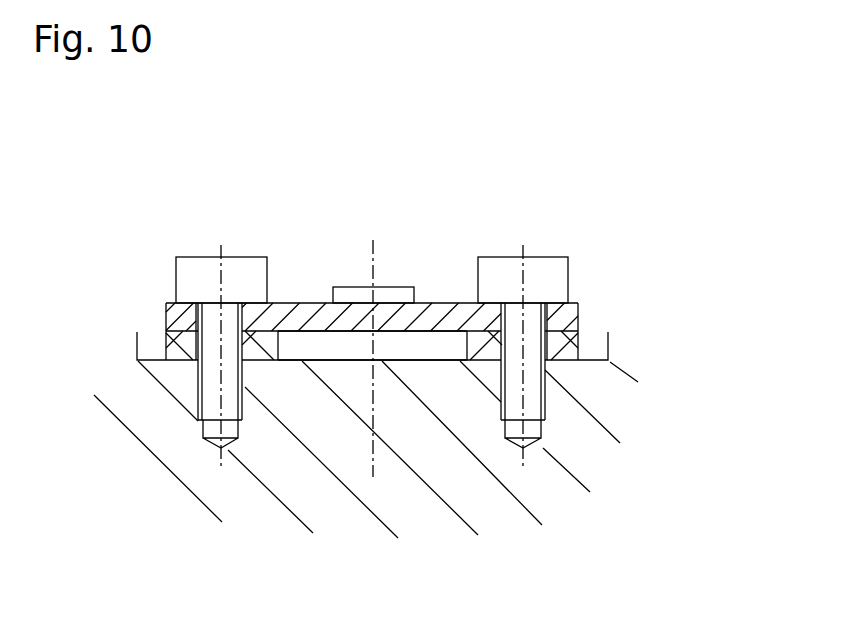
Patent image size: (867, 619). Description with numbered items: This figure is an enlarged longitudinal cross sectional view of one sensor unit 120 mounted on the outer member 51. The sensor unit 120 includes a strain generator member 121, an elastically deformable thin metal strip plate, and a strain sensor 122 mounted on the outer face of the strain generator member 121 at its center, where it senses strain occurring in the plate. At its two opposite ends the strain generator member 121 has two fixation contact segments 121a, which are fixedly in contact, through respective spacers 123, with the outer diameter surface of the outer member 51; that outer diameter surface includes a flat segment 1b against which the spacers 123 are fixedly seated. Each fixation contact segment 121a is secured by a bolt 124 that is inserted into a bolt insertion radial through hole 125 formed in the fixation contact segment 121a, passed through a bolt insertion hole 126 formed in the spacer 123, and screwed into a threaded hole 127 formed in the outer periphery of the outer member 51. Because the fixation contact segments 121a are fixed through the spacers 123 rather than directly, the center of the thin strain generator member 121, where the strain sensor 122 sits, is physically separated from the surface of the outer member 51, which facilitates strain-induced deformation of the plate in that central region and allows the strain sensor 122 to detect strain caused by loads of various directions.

The sensor unit 120 is at (237, 200).
The strain generator member 121 is at (455, 302).
The fixation contact segment 121a is at (262, 343).
The flat segment 1b is at (320, 357).
The strain sensor 122 is at (385, 287).
The spacer 123 is at (165, 350).
The bolt 124 is at (197, 257).
The bolt insertion radial through hole 125 is at (203, 330).
The bolt insertion hole 126 is at (204, 342).
The threaded hole 127 is at (239, 387).
The outer member 51 is at (674, 378).